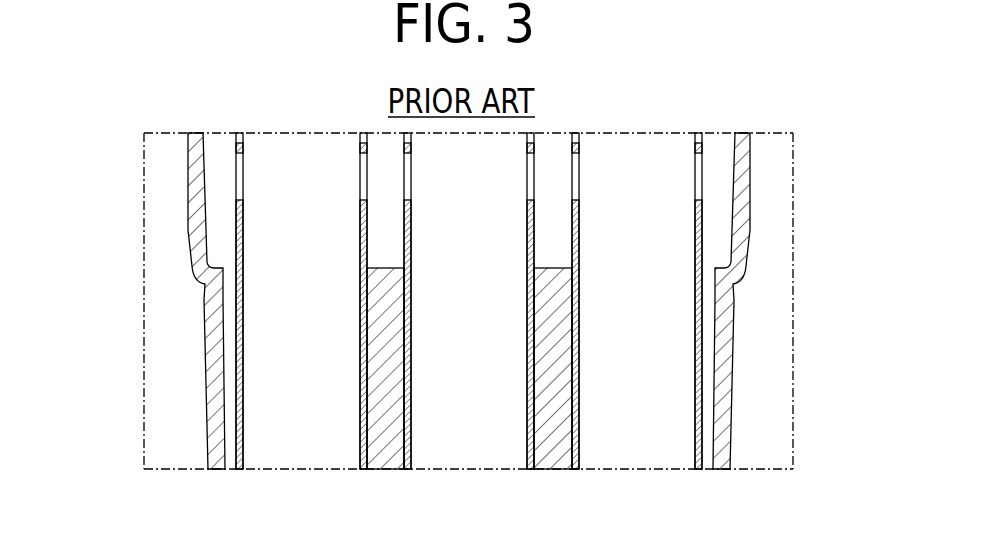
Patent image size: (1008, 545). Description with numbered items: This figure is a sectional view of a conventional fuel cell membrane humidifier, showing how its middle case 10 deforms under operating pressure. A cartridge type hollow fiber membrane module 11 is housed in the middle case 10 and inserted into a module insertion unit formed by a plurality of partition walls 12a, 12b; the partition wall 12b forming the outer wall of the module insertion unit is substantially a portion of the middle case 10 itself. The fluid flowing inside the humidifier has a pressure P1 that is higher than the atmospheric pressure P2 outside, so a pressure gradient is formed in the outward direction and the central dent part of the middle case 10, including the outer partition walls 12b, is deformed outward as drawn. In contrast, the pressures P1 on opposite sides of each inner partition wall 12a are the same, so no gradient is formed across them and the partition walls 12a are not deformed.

The middle case 10 is at (437, 336).
The hollow fiber membrane module 11 is at (237, 232).
The partition wall 12a is at (388, 456).
The partition wall 12b is at (216, 462).
The pressure P1 is at (246, 341).
The atmospheric pressure P2 is at (182, 193).